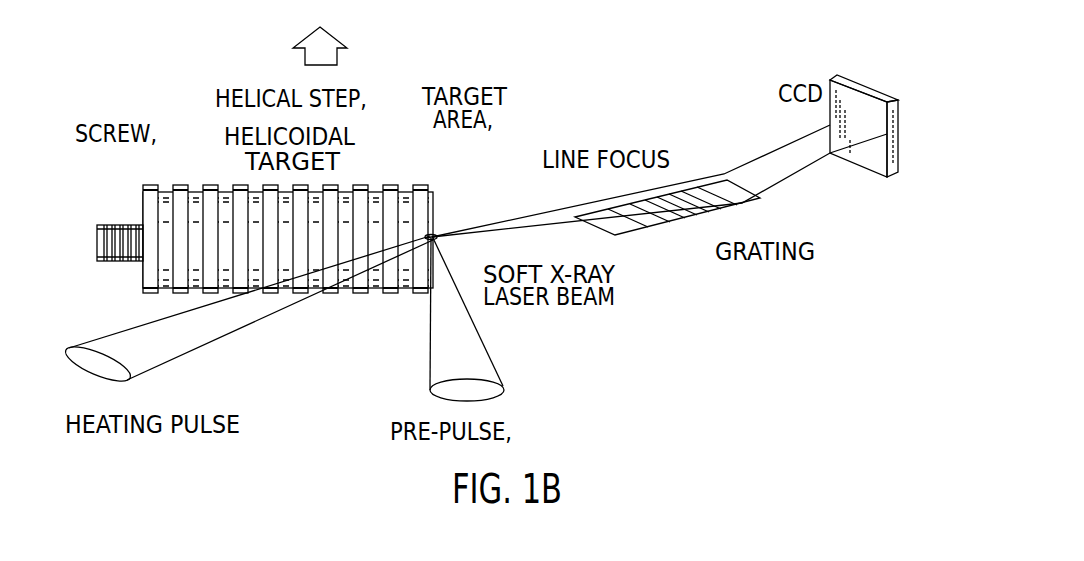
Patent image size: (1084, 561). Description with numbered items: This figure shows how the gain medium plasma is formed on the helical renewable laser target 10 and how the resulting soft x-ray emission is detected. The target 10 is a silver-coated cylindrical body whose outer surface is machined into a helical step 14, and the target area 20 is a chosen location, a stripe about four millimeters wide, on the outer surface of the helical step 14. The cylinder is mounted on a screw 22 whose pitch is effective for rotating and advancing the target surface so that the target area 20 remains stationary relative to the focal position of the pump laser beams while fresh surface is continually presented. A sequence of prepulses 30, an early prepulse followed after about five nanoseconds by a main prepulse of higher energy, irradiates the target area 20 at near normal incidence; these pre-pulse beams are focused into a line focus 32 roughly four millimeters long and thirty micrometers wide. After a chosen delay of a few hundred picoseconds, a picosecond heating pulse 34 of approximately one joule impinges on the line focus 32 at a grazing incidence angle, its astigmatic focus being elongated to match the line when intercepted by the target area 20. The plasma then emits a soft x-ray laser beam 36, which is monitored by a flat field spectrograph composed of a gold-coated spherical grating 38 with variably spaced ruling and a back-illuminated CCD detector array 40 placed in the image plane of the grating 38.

The target 10 is at (165, 185).
The helical step 14 is at (423, 188).
The target area 20 is at (431, 236).
The screw 22 is at (113, 223).
The prepulse 30 is at (486, 342).
The line focus 32 is at (433, 238).
The heating pulse 34 is at (247, 324).
The soft x-ray laser beam 36 is at (508, 232).
The grating 38 is at (702, 217).
The CCD detector array 40 is at (858, 82).